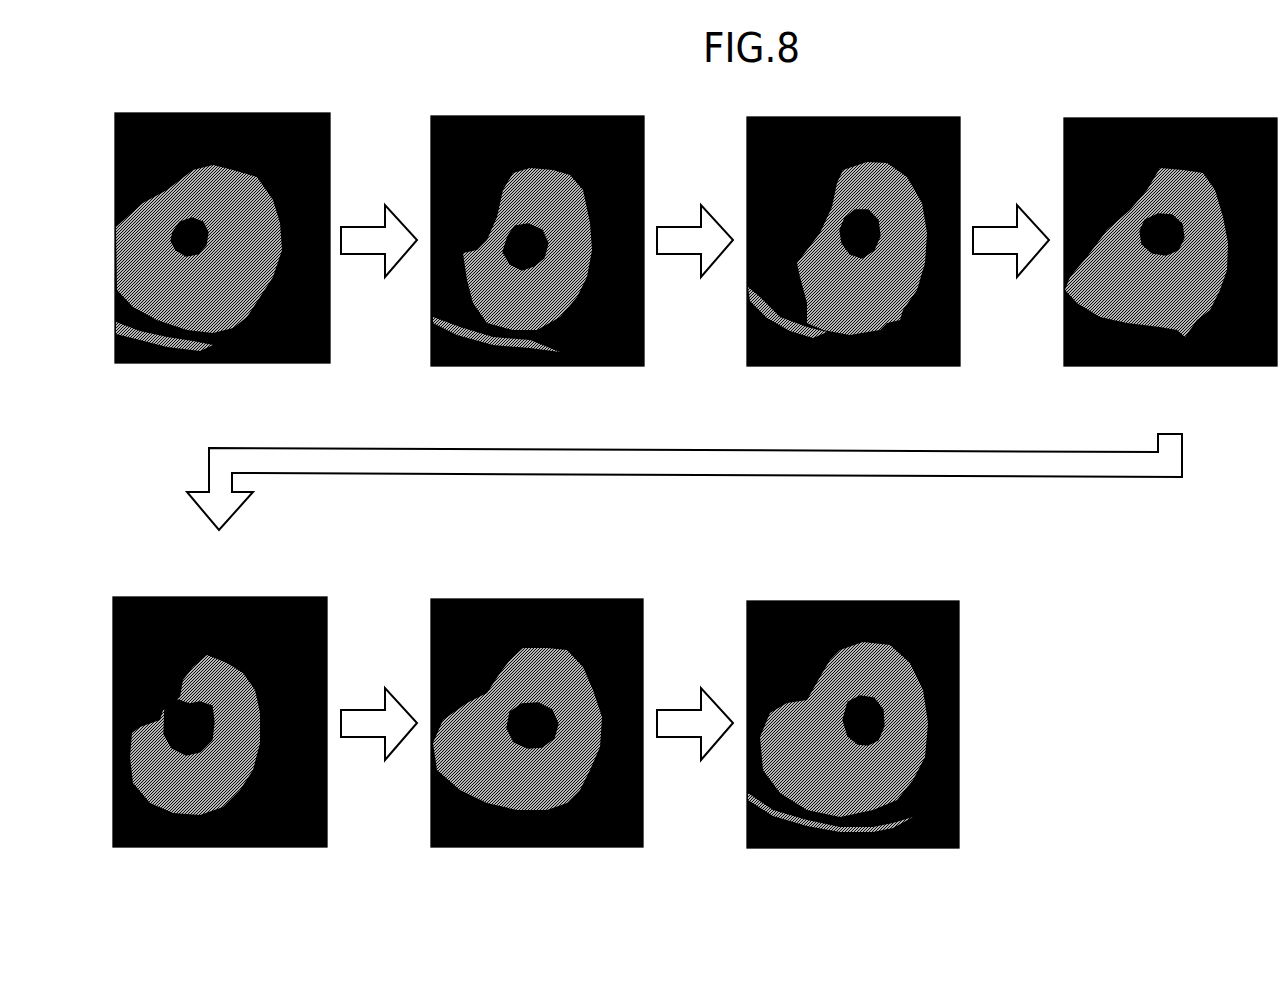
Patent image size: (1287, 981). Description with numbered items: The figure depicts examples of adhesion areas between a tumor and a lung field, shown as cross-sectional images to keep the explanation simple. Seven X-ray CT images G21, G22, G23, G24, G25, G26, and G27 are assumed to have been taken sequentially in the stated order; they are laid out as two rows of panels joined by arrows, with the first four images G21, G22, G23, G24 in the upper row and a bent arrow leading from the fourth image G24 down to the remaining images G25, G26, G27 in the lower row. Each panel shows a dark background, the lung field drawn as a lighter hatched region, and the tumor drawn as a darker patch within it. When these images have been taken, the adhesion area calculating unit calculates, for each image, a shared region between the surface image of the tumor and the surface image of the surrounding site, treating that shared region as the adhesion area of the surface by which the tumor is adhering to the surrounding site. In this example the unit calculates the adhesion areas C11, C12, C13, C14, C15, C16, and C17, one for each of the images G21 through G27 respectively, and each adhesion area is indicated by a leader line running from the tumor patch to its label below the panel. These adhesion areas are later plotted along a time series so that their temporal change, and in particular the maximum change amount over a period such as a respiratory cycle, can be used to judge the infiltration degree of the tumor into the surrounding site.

The X-ray CT image G21 is at (265, 104).
The X-ray CT image G22 is at (578, 116).
The X-ray CT image G23 is at (895, 117).
The X-ray CT image G24 is at (1212, 118).
The X-ray CT image G25 is at (262, 597).
The X-ray CT image G26 is at (578, 599).
The X-ray CT image G27 is at (895, 601).
The adhesion area C11 is at (183, 250).
The adhesion area C12 is at (517, 267).
The adhesion area C13 is at (850, 250).
The adhesion area C14 is at (1152, 253).
The adhesion area C15 is at (183, 730).
The adhesion area C16 is at (527, 743).
The adhesion area C17 is at (853, 743).